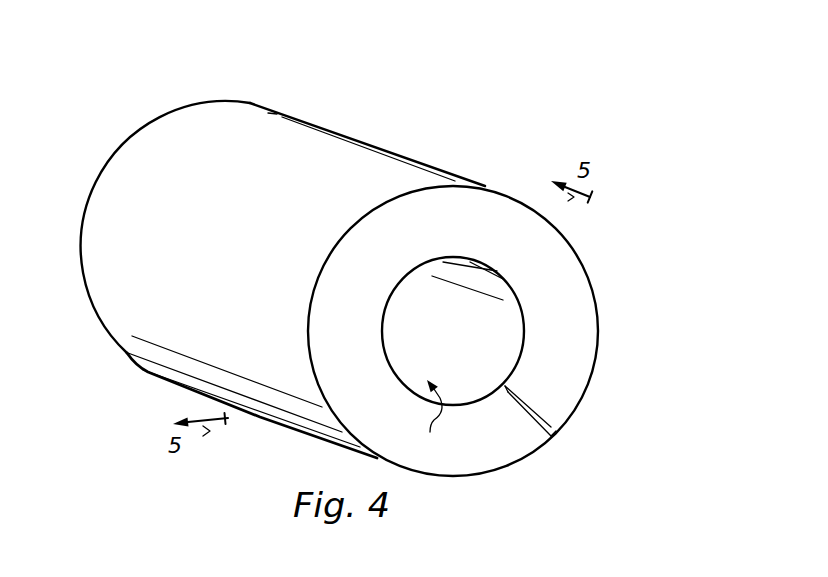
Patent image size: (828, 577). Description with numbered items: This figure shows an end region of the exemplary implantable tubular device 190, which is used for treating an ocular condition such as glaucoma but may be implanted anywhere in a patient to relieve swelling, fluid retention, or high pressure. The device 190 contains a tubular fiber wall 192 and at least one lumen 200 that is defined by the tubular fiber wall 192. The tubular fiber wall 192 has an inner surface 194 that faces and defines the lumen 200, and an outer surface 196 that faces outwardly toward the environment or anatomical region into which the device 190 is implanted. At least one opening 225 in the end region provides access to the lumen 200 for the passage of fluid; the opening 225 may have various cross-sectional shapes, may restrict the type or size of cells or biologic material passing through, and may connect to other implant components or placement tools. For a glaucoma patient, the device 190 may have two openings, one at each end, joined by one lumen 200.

The implantable tubular device 190 is at (418, 93).
The tubular fiber wall 192 is at (533, 402).
The inner surface 194 is at (505, 333).
The outer surface 196 is at (597, 297).
The lumen 200 is at (476, 328).
The opening 225 is at (432, 419).